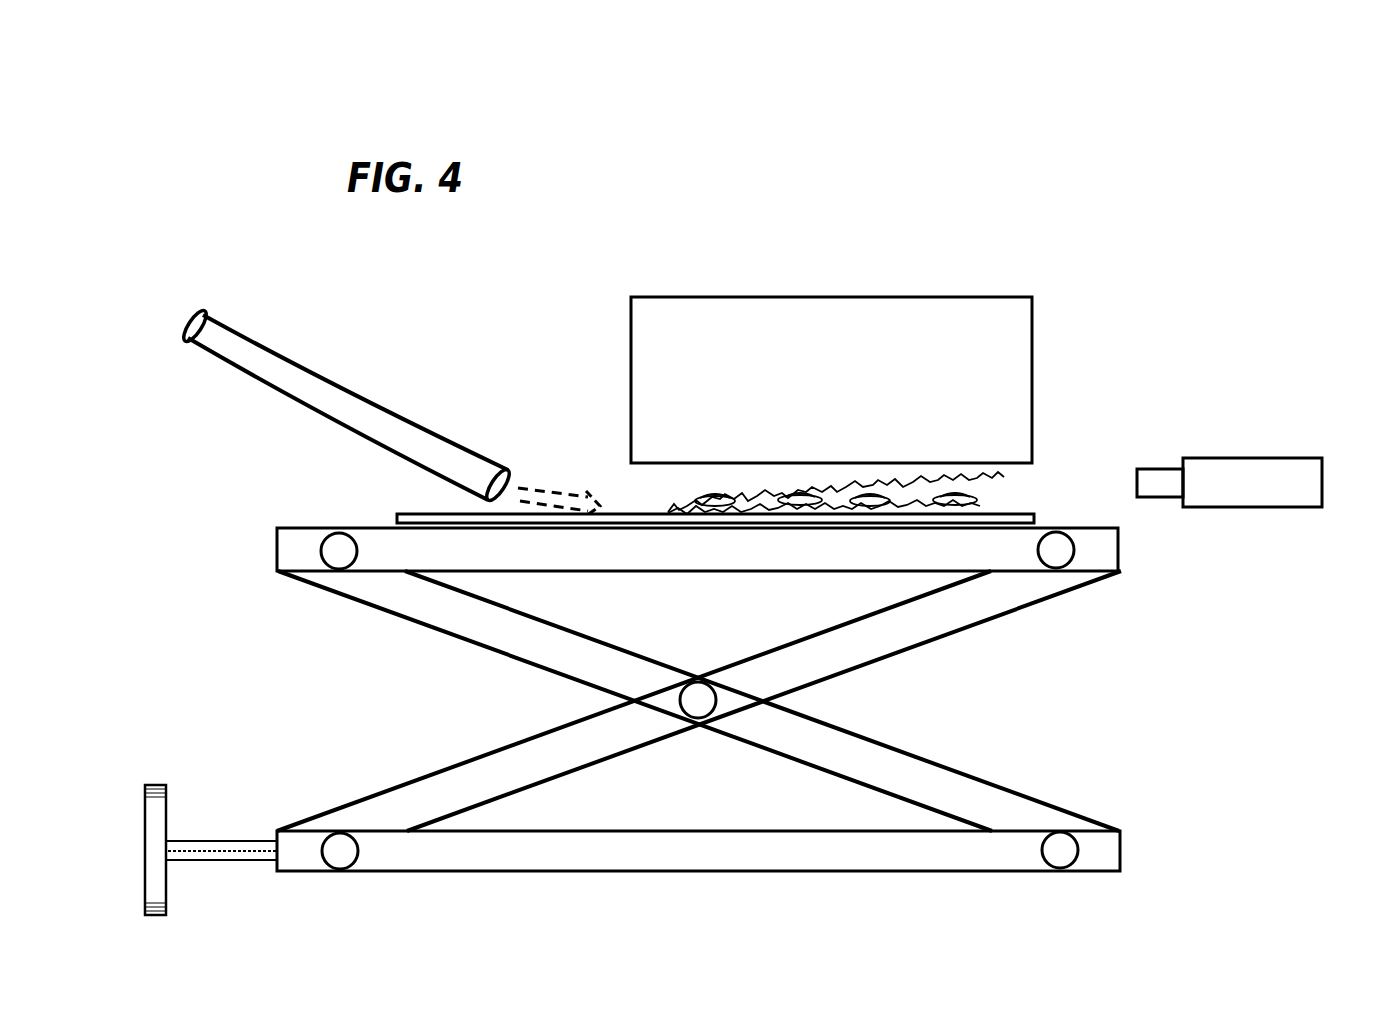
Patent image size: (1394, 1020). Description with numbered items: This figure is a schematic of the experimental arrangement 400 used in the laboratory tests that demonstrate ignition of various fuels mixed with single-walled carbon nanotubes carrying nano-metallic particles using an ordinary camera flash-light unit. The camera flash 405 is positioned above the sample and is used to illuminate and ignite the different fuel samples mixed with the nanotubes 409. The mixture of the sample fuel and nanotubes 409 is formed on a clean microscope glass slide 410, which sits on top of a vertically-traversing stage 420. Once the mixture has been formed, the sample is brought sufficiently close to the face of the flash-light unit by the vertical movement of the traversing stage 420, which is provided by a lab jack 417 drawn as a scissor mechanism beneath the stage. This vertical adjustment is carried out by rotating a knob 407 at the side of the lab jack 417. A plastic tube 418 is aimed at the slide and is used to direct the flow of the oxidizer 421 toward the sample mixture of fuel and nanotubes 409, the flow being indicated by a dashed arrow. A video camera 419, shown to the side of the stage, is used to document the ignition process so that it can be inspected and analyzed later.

The experimental arrangement 400 is at (1125, 74).
The camera flash 405 is at (902, 341).
The knob 407 is at (221, 801).
The sample mixture of fuel and SWCNTs carrying nano-metallic particles 409 is at (918, 466).
The microscope glass slide 410 is at (619, 478).
The lab jack 417 is at (658, 701).
The plastic tube 418 is at (347, 383).
The video camera 419 is at (1258, 431).
The traversing stage 420 is at (627, 532).
The oxidizer 421 is at (523, 452).